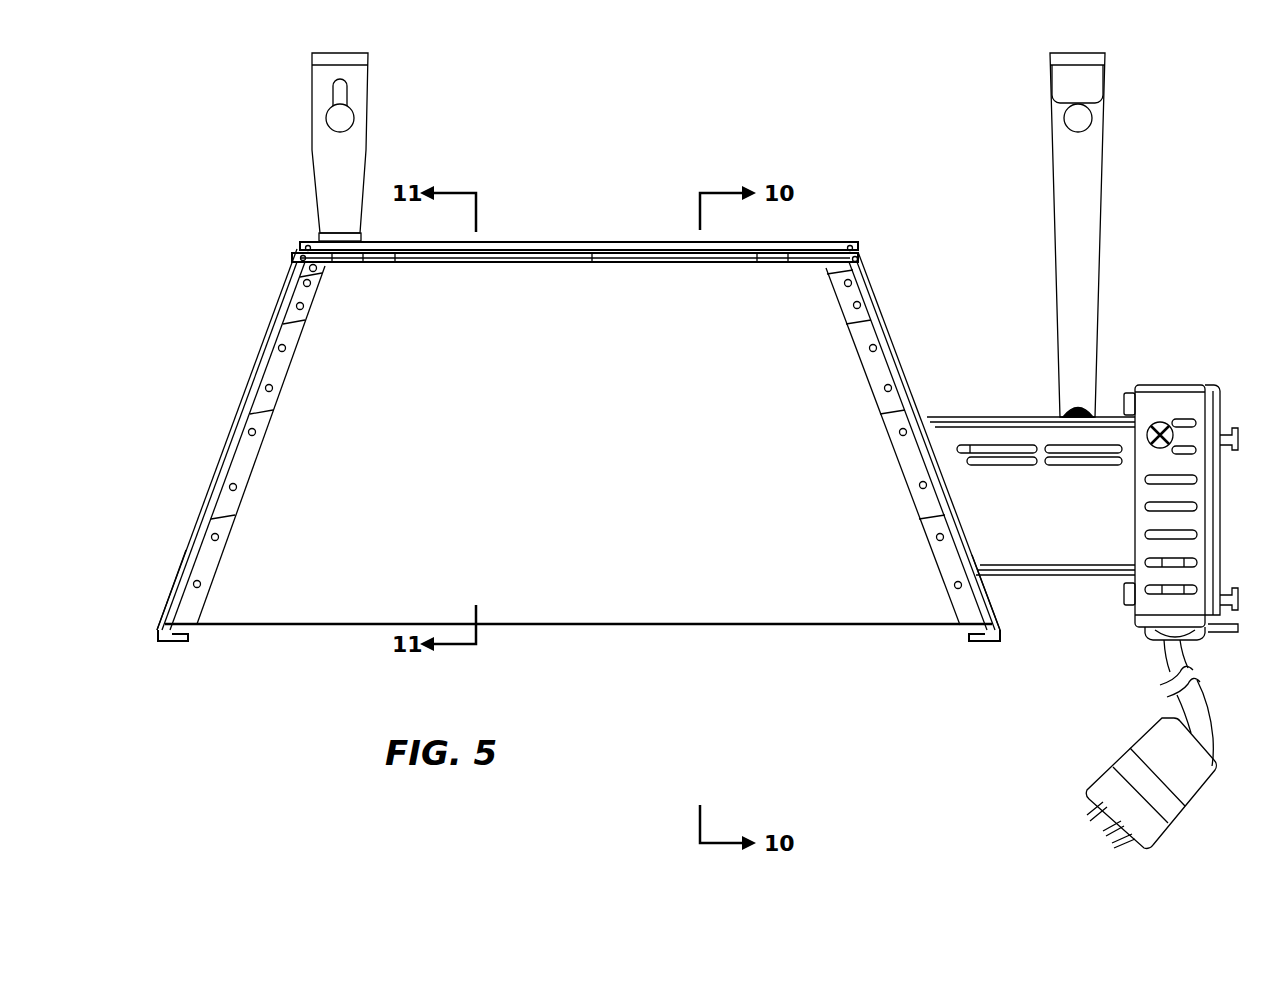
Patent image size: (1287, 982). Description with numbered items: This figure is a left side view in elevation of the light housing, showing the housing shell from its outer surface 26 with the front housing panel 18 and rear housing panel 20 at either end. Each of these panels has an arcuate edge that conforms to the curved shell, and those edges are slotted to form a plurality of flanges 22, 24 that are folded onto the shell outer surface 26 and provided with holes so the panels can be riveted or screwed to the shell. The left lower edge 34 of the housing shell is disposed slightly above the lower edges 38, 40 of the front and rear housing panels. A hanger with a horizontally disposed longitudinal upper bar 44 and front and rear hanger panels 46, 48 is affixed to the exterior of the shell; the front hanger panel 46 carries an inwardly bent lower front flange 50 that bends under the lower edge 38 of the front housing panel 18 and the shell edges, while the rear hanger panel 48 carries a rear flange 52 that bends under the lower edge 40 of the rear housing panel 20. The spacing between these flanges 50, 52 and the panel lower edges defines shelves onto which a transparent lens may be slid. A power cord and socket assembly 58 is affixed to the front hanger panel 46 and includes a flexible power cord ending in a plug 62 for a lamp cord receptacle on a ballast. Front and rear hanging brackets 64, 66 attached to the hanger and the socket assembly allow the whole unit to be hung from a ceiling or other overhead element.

The front housing panel 18 is at (903, 366).
The rear housing panel 20 is at (258, 356).
The flanges 22 is at (930, 563).
The flanges 24 is at (210, 558).
The shell outer surface 26 is at (590, 389).
The left lower edge 34 is at (768, 627).
The lower edge of front housing panel 38 is at (971, 633).
The lower edge of rear housing panel 40 is at (173, 631).
The longitudinal upper bar 44 is at (582, 243).
The front hanger panel 46 is at (1003, 622).
The rear hanger panel 48 is at (160, 610).
The lower front flange 50 is at (985, 644).
The rear flange 52 is at (165, 645).
The power cord and socket assembly 58 is at (1158, 385).
The plug 62 is at (1130, 756).
The front hanging bracket 64 is at (1105, 178).
The rear hanging bracket 66 is at (365, 162).